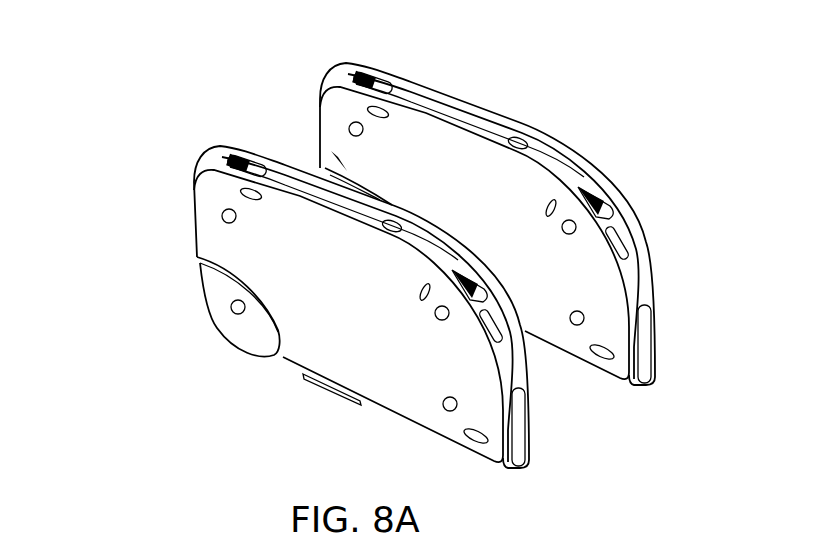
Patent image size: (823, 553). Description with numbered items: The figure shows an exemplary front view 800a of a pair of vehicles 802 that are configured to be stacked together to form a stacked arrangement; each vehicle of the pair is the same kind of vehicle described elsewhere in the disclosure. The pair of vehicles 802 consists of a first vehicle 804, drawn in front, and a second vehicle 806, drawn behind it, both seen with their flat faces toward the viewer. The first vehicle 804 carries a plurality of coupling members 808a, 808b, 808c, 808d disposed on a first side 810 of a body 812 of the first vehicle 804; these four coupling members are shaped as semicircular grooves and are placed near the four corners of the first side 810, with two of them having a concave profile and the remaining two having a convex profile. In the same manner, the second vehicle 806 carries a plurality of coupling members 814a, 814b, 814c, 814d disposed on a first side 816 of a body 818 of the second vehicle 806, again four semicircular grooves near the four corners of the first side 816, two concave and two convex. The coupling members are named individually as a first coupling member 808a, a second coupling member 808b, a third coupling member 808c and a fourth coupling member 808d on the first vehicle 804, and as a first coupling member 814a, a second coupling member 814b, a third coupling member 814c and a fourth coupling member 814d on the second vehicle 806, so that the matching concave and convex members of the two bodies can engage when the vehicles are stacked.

The exemplary front view 800a is at (112, 41).
The pair of vehicles 802 is at (222, 150).
The first vehicle 804 is at (527, 444).
The second vehicle 806 is at (648, 372).
The first coupling member 808a is at (222, 220).
The second coupling member 808b is at (440, 320).
The third coupling member 808c is at (440, 404).
The fourth coupling member 808d is at (230, 308).
The first side 810 is at (217, 191).
The body 812 is at (300, 352).
The first coupling member 814a is at (383, 76).
The second coupling member 814b is at (567, 231).
The third coupling member 814c is at (578, 325).
The fourth coupling member 814d is at (331, 152).
The first side 816 is at (512, 198).
The body 818 is at (458, 148).